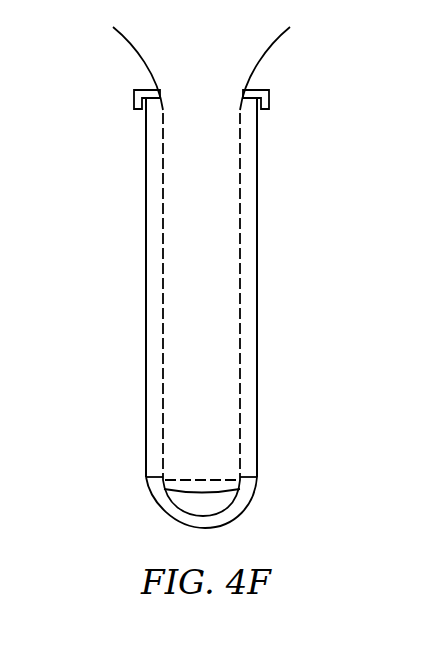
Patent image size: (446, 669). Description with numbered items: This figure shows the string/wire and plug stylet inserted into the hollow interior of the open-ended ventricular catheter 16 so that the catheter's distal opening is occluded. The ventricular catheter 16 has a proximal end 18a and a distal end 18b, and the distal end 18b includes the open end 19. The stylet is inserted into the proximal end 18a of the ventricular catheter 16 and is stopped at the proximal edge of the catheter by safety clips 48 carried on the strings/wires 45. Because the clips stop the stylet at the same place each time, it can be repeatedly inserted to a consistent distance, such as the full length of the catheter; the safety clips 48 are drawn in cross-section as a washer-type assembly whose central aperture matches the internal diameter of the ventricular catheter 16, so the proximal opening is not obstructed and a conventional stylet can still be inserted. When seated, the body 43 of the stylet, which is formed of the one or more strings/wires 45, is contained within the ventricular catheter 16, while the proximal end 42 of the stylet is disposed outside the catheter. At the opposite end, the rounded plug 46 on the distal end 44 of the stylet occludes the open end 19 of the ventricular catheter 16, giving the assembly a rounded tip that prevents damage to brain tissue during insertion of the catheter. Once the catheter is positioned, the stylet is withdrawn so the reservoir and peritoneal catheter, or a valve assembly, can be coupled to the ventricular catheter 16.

The proximal end 42 is at (116, 52).
The proximal end 18a is at (128, 126).
The safety clips 48 is at (270, 110).
The ventricular catheter 16 is at (258, 210).
The body 43 is at (147, 287).
The strings/wires 45 is at (164, 350).
The distal end 18b is at (276, 458).
The open end 19 is at (253, 498).
The distal end 44 is at (148, 510).
The rounded plug 46 is at (230, 514).